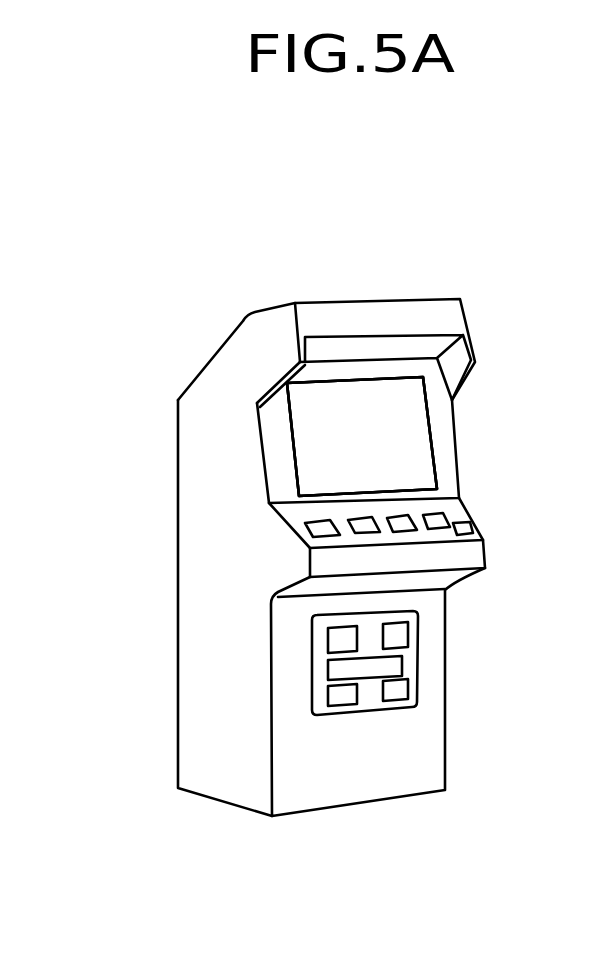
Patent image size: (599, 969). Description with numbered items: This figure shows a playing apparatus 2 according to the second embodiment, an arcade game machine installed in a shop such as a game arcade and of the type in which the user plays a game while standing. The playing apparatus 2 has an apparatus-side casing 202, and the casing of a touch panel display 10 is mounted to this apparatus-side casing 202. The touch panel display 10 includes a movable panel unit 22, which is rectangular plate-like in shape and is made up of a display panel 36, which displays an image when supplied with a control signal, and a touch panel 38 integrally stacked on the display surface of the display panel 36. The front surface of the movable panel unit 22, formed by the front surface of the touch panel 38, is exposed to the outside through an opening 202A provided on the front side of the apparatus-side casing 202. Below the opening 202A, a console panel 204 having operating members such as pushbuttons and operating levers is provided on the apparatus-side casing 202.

The playing apparatus 2 is at (445, 276).
The apparatus-side casing 202 is at (198, 492).
The opening 202A is at (426, 412).
The movable panel unit 22 is at (412, 443).
The touch panel display 10 is at (392, 475).
The display panel 36 is at (312, 425).
The touch panel 38 is at (312, 425).
The console panel 204 is at (462, 514).